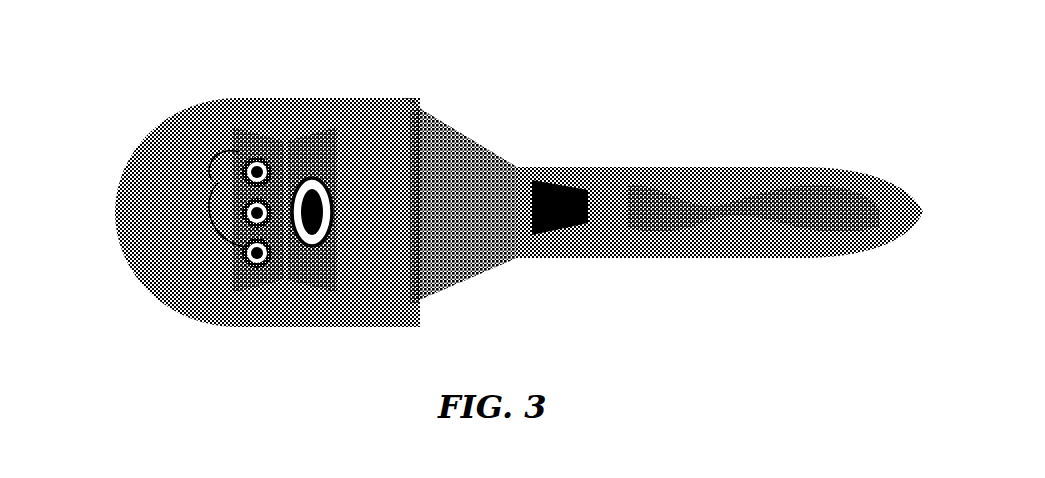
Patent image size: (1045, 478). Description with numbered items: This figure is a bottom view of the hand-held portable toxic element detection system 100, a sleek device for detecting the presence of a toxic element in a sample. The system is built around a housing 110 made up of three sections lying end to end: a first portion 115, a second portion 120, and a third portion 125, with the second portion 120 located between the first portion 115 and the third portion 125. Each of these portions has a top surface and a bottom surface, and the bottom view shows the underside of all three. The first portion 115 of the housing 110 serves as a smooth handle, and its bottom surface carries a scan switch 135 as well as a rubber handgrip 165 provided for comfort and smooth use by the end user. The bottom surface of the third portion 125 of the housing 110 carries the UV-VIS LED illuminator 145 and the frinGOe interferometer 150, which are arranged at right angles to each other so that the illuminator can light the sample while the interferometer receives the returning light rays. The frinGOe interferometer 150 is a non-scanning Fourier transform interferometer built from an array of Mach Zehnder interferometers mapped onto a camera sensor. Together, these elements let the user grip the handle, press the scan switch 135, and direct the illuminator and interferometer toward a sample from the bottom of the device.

The hand-held portable toxic element detection system 100 is at (475, 178).
The housing 110 is at (113, 205).
The first portion 115 is at (765, 167).
The second portion 120 is at (503, 270).
The third portion 125 is at (288, 95).
The scan switch 135 is at (550, 183).
The UV-VIS LED illuminator 145 is at (228, 270).
The frinGOe interferometer 150 is at (333, 278).
The rubber handgrip 165 is at (747, 188).